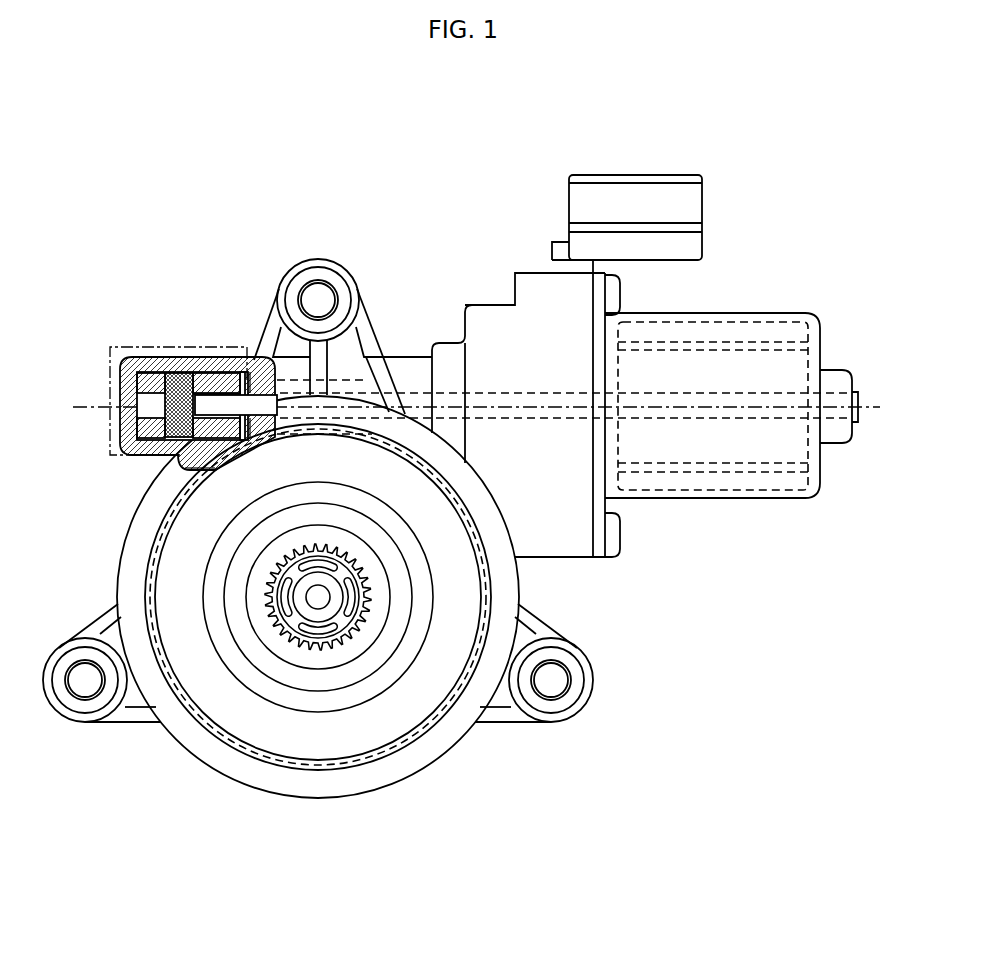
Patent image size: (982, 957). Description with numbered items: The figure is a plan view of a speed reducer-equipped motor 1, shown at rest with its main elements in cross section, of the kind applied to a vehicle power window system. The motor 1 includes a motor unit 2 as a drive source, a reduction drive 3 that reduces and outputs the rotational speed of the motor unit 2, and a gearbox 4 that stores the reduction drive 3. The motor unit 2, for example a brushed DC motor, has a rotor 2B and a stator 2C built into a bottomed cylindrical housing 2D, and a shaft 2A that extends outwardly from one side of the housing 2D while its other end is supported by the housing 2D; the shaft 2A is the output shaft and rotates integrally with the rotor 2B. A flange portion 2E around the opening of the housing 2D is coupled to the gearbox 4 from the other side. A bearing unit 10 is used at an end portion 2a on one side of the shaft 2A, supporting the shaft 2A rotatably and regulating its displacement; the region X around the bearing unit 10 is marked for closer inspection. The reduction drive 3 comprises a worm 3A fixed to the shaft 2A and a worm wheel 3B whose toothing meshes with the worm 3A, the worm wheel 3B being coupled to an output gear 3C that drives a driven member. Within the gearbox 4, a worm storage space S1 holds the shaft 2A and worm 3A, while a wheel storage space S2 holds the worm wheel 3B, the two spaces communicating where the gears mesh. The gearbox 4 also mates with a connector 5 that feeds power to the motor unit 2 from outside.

The speed reducer-equipped motor 1 is at (97, 272).
The motor unit 2 is at (742, 313).
The shaft 2A is at (503, 390).
The rotor 2B is at (810, 355).
The stator 2C is at (770, 498).
The housing 2D is at (714, 498).
The flange portion 2E is at (600, 557).
The end portion 2a is at (197, 370).
The reduction drive 3 is at (380, 757).
The worm 3A is at (355, 378).
The worm wheel 3B is at (433, 732).
The output gear 3C is at (332, 650).
The gearbox 4 is at (125, 552).
The connector 5 is at (706, 214).
The bearing unit 10 is at (168, 368).
The enlarged region X is at (112, 383).
The worm storage space S1 is at (257, 380).
The wheel storage space S2 is at (187, 482).